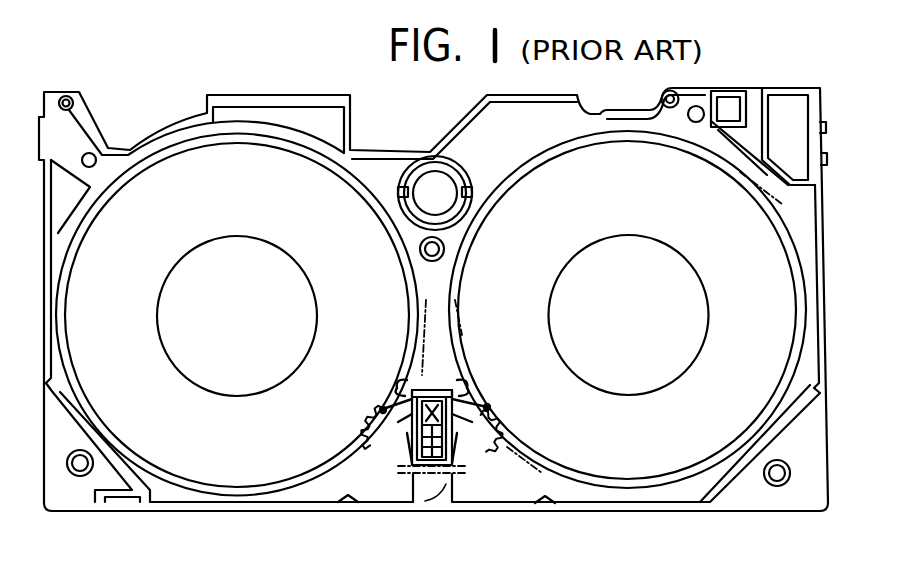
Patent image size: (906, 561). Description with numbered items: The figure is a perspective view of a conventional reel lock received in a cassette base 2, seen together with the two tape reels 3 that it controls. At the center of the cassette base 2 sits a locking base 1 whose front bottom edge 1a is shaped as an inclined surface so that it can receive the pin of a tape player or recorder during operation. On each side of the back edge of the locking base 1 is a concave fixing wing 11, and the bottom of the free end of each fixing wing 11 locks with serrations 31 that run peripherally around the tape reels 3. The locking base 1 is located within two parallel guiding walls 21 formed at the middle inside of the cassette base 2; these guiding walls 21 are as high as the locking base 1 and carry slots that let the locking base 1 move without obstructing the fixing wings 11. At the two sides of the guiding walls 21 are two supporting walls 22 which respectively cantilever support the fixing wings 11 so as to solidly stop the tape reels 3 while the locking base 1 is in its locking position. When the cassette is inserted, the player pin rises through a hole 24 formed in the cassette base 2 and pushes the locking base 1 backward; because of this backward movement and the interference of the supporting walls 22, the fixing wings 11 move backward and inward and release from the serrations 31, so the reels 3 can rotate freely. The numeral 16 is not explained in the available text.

The locking base 1 is at (462, 463).
The front bottom edge 1a is at (440, 390).
The cassette base 2 is at (628, 512).
The tape reels 3 is at (766, 228).
The fixing wing 11 is at (383, 416).
The opening 16 is at (409, 488).
The guiding walls 21 is at (420, 390).
The supporting walls 22 is at (345, 505).
The hole 24 is at (418, 330).
The serrations 31 is at (400, 380).